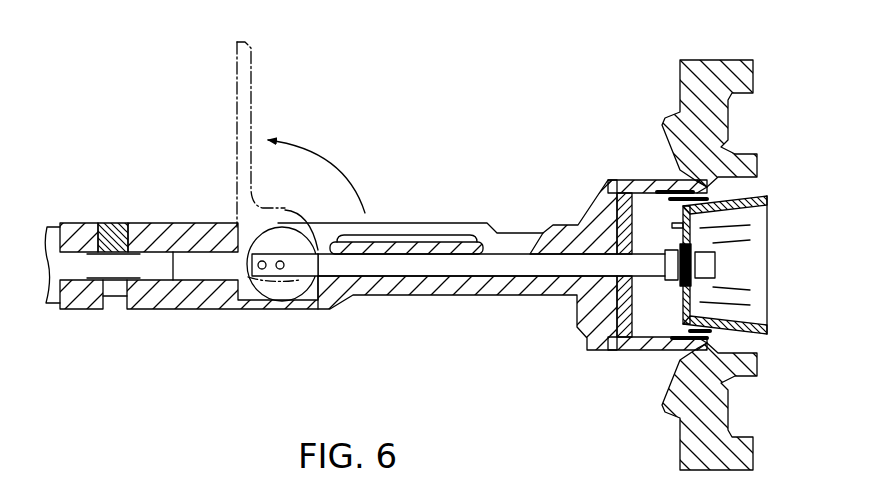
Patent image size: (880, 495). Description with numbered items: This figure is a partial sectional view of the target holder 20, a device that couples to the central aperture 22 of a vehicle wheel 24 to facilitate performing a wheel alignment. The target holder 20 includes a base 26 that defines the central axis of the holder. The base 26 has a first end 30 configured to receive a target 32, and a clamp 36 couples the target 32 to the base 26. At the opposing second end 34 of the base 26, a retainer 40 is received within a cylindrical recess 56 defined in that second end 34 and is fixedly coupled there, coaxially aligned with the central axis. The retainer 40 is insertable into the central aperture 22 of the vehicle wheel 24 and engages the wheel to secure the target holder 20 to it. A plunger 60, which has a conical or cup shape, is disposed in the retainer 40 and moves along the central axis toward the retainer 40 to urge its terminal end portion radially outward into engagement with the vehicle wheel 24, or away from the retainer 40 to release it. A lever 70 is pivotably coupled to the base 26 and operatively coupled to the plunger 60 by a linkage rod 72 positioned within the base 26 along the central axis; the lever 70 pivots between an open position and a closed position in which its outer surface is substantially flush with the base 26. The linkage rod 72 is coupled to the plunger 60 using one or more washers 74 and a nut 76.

The target holder 20 is at (512, 46).
The central aperture 22 is at (738, 307).
The vehicle wheel 24 is at (757, 78).
The base 26 is at (350, 297).
The first end 30 is at (40, 342).
The target 32 is at (150, 268).
The second end 34 is at (655, 156).
The clamp 36 is at (118, 238).
The retainer 40 is at (622, 194).
The cylindrical recess 56 is at (658, 299).
The plunger 60 is at (740, 212).
The lever 70 is at (318, 225).
The linkage rod 72 is at (503, 265).
The washer 74 is at (690, 290).
The nut 76 is at (700, 284).